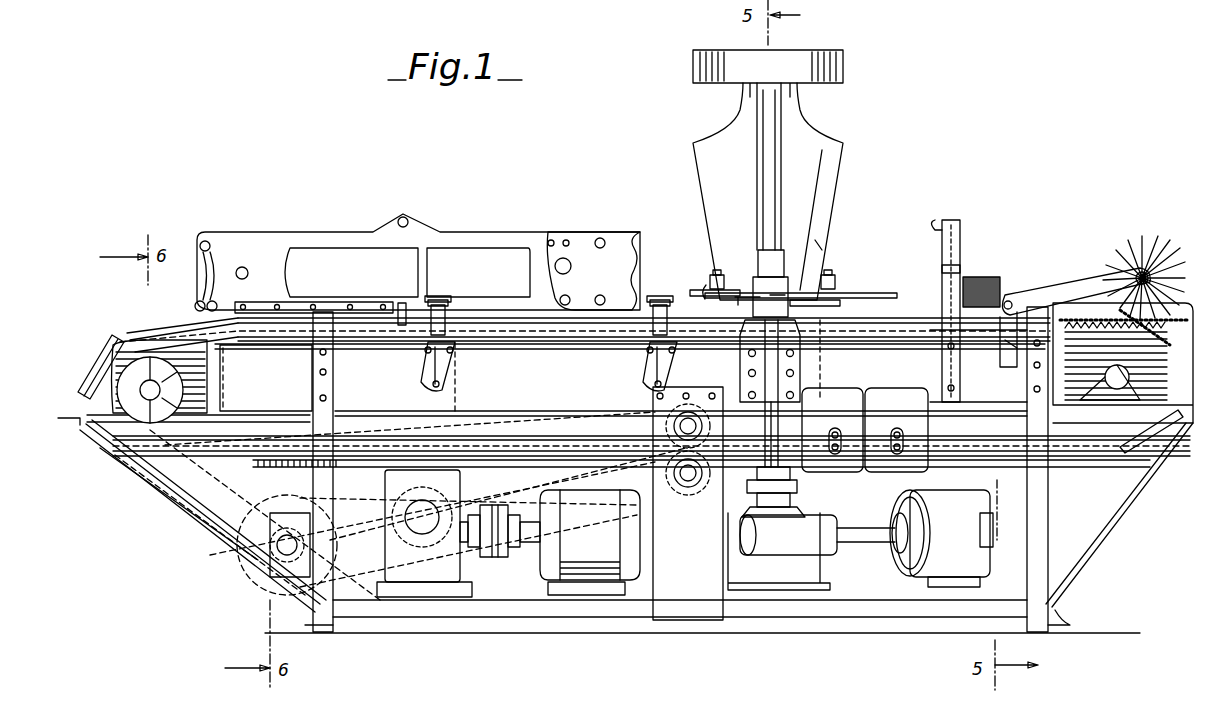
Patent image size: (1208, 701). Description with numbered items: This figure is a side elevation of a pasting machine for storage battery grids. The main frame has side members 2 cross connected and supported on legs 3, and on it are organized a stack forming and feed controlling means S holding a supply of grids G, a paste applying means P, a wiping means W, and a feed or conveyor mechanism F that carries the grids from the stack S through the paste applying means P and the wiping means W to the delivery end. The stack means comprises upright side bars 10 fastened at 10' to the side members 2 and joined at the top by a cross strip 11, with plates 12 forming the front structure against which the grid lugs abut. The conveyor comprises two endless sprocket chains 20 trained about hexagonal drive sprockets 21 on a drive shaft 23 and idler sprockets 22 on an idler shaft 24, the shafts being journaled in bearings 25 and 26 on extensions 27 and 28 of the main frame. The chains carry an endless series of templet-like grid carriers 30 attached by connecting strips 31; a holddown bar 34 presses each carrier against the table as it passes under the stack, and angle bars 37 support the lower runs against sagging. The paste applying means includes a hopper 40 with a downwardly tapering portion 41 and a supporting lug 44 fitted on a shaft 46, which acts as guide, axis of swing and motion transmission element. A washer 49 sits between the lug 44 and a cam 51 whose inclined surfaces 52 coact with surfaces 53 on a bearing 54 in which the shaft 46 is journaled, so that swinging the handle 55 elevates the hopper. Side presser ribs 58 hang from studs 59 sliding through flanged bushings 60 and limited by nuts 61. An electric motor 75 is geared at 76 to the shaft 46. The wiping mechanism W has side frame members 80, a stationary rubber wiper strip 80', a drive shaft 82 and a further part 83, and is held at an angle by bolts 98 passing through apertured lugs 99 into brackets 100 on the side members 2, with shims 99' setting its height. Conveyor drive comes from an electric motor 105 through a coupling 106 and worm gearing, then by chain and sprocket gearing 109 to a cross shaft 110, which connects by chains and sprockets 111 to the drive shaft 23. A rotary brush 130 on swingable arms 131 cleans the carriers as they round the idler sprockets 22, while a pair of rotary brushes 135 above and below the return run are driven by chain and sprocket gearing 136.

The side members 2 is at (557, 371).
The legs 3 is at (330, 490).
The upright side bars 10 is at (901, 333).
The fastening of side bars 10' is at (926, 350).
The cross strip 11 is at (936, 210).
The plates 12 is at (942, 256).
The endless sprocket chains 20 is at (410, 443).
The hexagonal drive sprockets 21 is at (118, 342).
The idler sprockets 22 is at (1158, 340).
The drive shaft 23 is at (90, 370).
The idler shaft 24 is at (1115, 392).
The bearing 25 is at (140, 470).
The bearing 26 is at (1130, 395).
The frame extension 27 is at (185, 510).
The frame extension 28 is at (1158, 470).
The grid carriers 30 is at (328, 315).
The connecting strips 31 is at (465, 316).
The holddown bar 34 is at (1000, 345).
The angle bars 37 is at (565, 460).
The hopper 40 is at (838, 142).
The downwardly tapering portion 41 is at (838, 195).
The supporting lug 44 is at (771, 263).
The shaft 46 is at (760, 162).
The spacing washer 49 is at (782, 298).
The cam 51 is at (748, 295).
The cam surfaces 52 is at (778, 290).
The bearing cam surfaces 53 is at (740, 340).
The bearing 54 is at (771, 393).
The handle 55 is at (848, 300).
The presser ribs 58 is at (850, 292).
The studs 59 is at (694, 290).
The flanged bushing 60 is at (708, 284).
The nuts 61 is at (722, 272).
The electric motor 75 is at (943, 533).
The gearing 76 is at (811, 528).
The side frame members 80 is at (407, 243).
The flexible rubber strip 80' is at (314, 292).
The drive shaft of wiping mechanism 82 is at (244, 268).
The hole 83 is at (568, 262).
The bolts 98 is at (557, 285).
The apertured lugs 99 is at (549, 309).
The spacers or shims 99' is at (405, 296).
The brackets 100 is at (428, 340).
The electric motor 105 is at (590, 542).
The coupling 106 is at (485, 560).
The chain and sprocket gearing 109 is at (390, 568).
The cross shaft 110 is at (295, 540).
The chains and sprockets 111 is at (210, 500).
The rotary brush 130 is at (1146, 272).
The swingable arms 131 is at (1097, 282).
The rotary brushes 135 is at (690, 416).
The chain and sprocket gearing 136 is at (592, 443).
The wiping means W is at (515, 236).
The paste applying means P is at (812, 232).
The stack forming and feed controlling means S is at (962, 266).
The grids G is at (990, 285).
The feed or conveyor mechanism F is at (905, 312).